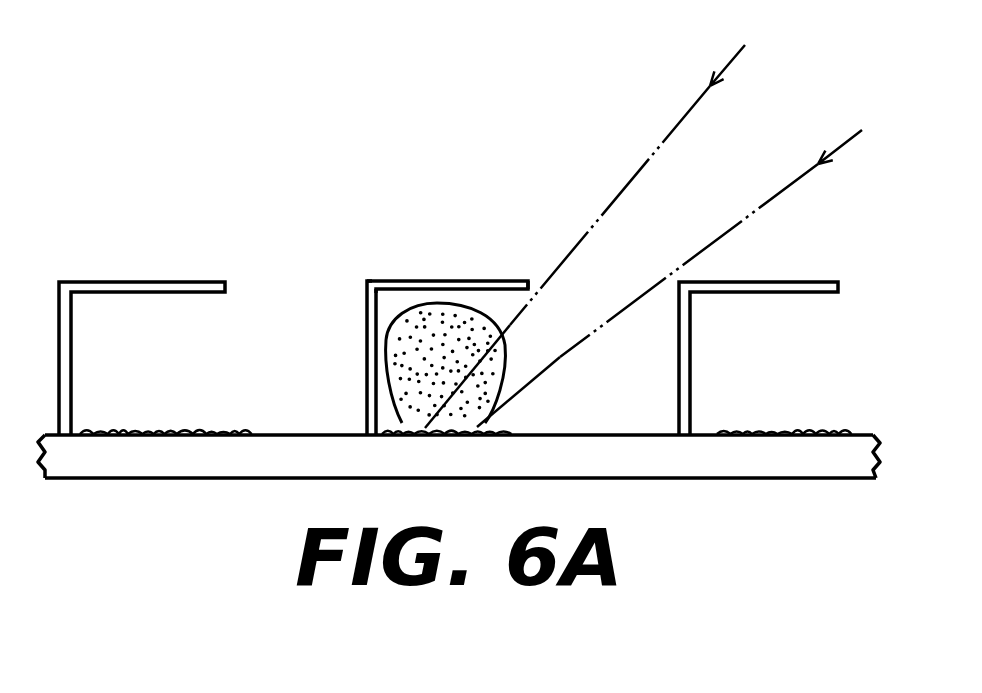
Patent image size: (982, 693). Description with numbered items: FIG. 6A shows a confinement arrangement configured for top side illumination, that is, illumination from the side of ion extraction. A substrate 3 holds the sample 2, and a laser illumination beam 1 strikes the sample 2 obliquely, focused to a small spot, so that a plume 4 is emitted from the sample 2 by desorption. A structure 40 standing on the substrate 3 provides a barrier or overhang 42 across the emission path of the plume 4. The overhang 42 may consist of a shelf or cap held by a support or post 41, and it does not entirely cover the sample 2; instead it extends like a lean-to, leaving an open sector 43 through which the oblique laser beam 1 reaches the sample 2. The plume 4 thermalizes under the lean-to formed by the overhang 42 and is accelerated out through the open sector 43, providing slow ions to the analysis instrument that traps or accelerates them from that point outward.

The laser illumination beam 1 is at (740, 27).
The sample 2 is at (150, 430).
The substrate 3 is at (633, 437).
The plume 4 is at (460, 291).
The structure 40 is at (395, 308).
The support or post 41 is at (366, 330).
The overhang 42 is at (435, 263).
The open sector 43 is at (567, 232).